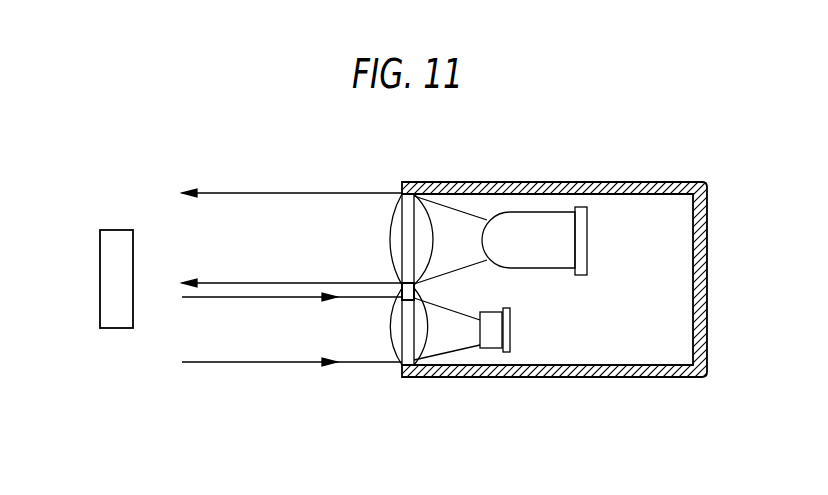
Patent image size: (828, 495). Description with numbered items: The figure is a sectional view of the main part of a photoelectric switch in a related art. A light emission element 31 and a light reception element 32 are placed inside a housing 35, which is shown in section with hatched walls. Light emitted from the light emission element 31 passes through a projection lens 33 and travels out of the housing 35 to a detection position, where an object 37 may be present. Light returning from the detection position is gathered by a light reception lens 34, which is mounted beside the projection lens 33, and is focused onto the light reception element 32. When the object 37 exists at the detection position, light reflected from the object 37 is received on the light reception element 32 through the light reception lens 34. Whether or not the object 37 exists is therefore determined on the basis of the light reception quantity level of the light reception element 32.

The light emission element 31 is at (538, 227).
The light reception element 32 is at (493, 348).
The projection lens 33 is at (392, 244).
The light reception lens 34 is at (392, 333).
The housing 35 is at (632, 183).
The object 37 is at (113, 230).